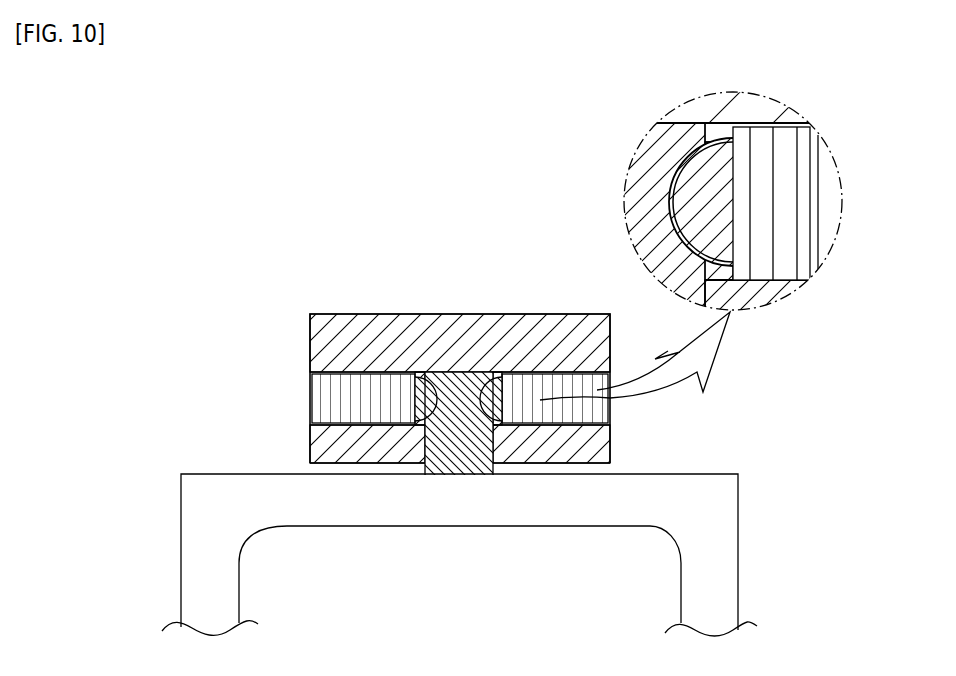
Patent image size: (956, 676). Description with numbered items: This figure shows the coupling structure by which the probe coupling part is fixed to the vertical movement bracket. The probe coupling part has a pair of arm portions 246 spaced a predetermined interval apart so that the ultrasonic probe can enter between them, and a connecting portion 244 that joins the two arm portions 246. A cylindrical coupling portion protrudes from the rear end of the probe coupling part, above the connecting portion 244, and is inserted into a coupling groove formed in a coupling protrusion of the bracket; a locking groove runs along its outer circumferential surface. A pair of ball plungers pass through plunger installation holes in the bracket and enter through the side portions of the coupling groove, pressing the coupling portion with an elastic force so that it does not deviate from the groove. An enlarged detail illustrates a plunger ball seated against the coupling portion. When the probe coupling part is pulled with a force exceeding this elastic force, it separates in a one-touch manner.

The connecting portion 244 is at (633, 495).
The arm portion 246 is at (202, 585).